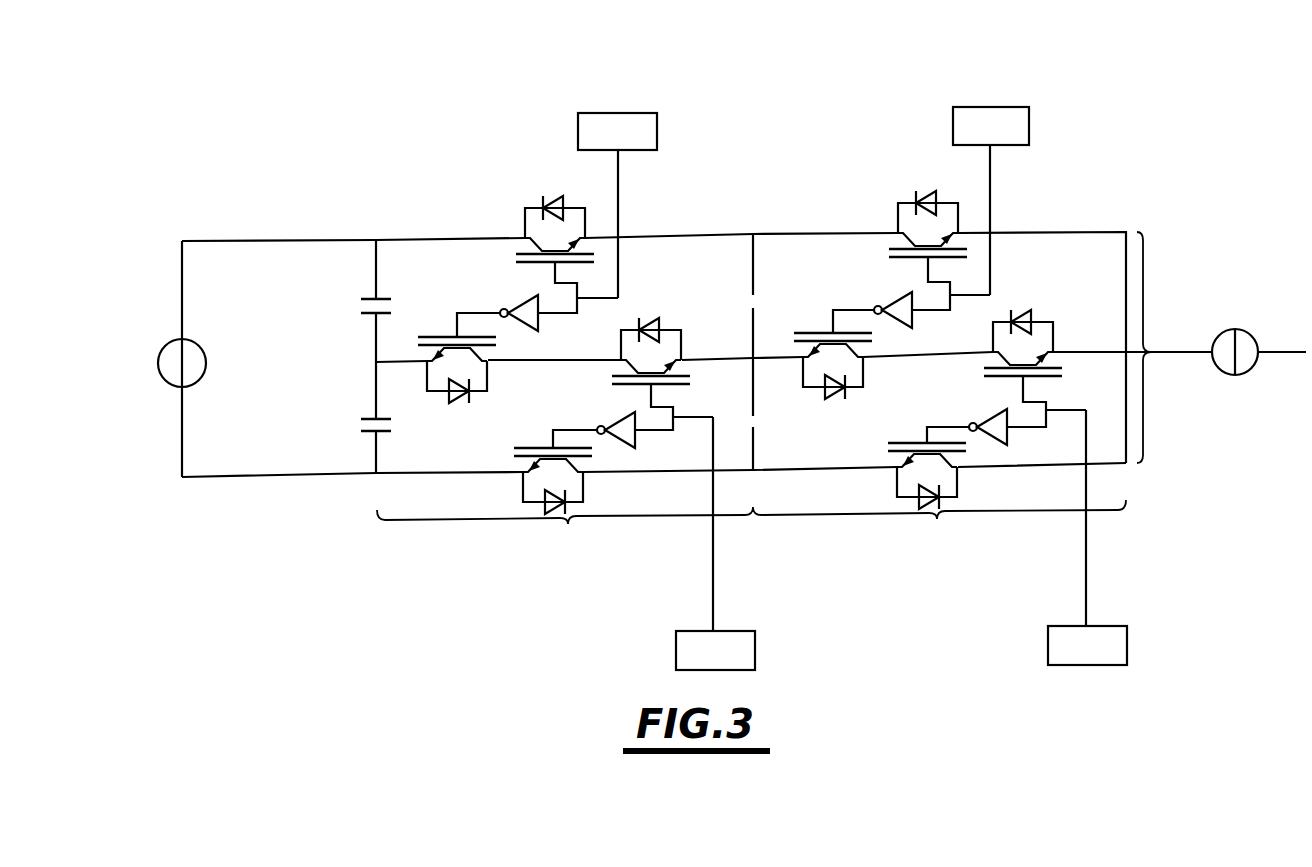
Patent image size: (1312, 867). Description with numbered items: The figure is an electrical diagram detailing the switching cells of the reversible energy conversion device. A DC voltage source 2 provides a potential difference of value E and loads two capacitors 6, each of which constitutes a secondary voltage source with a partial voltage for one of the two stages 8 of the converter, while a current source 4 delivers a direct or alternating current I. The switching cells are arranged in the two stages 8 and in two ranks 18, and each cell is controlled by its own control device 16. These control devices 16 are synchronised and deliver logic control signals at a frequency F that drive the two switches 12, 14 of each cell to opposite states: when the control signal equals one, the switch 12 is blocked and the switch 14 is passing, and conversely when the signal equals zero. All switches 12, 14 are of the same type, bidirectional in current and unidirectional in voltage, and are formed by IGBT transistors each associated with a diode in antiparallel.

The DC voltage source 2 is at (150, 382).
The current source 4 is at (1252, 327).
The capacitors 6 is at (352, 426).
The stages 8 is at (1168, 347).
The switch 12 is at (997, 538).
The switch 14 is at (1085, 210).
The control device 16 is at (1132, 738).
The ranks 18 is at (751, 537).